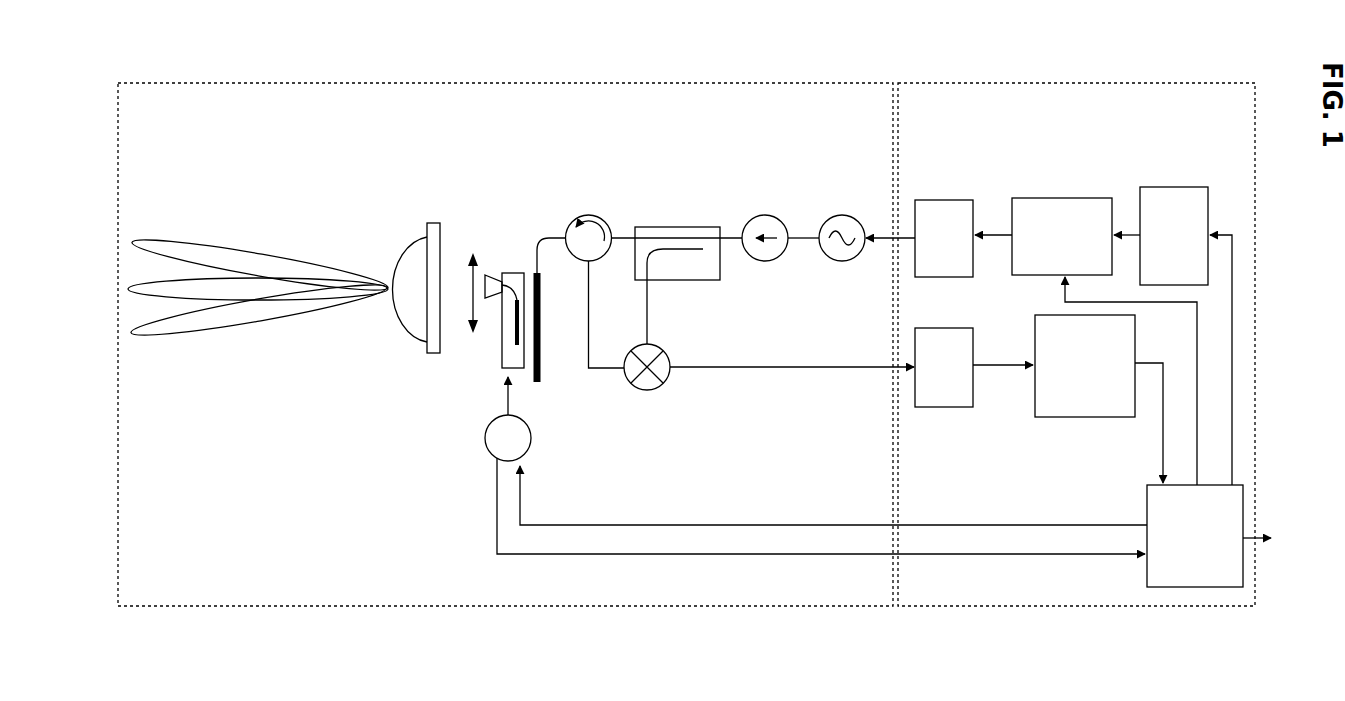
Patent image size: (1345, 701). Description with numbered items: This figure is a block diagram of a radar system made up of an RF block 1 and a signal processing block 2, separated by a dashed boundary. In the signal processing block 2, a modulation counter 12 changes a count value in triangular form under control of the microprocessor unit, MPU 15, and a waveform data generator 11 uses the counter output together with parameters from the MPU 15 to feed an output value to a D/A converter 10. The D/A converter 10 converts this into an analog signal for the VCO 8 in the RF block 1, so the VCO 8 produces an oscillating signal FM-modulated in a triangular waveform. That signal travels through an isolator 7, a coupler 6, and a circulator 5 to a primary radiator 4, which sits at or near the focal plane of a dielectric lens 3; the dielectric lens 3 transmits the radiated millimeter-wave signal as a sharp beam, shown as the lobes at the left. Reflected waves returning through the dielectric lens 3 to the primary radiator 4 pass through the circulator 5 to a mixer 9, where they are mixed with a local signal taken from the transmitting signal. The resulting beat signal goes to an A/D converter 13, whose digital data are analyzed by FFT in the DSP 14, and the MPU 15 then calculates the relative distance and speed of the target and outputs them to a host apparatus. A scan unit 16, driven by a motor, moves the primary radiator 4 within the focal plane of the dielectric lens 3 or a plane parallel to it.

The RF block 1 is at (660, 82).
The signal processing block 2 is at (1083, 80).
The dielectric lens 3 is at (402, 235).
The primary radiator 4 is at (511, 262).
The circulator 5 is at (595, 215).
The coupler 6 is at (695, 226).
The isolator 7 is at (770, 213).
The VCO 8 is at (843, 215).
The mixer 9 is at (663, 382).
The D/A converter 10 is at (962, 198).
The waveform data generator 11 is at (1113, 197).
The modulation counter 12 is at (1183, 185).
The A/D converter 13 is at (938, 410).
The DSP 14 is at (1042, 418).
The MPU 15 is at (1245, 482).
The scan unit 16 is at (468, 442).